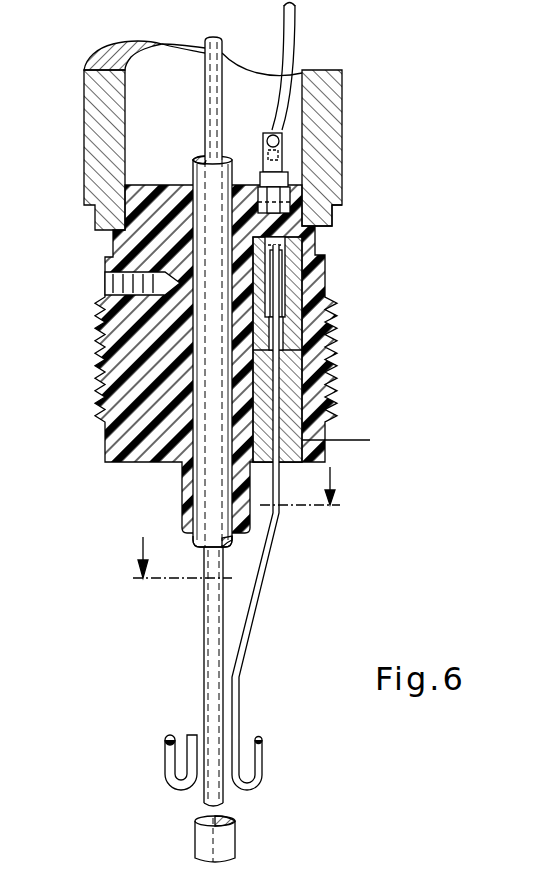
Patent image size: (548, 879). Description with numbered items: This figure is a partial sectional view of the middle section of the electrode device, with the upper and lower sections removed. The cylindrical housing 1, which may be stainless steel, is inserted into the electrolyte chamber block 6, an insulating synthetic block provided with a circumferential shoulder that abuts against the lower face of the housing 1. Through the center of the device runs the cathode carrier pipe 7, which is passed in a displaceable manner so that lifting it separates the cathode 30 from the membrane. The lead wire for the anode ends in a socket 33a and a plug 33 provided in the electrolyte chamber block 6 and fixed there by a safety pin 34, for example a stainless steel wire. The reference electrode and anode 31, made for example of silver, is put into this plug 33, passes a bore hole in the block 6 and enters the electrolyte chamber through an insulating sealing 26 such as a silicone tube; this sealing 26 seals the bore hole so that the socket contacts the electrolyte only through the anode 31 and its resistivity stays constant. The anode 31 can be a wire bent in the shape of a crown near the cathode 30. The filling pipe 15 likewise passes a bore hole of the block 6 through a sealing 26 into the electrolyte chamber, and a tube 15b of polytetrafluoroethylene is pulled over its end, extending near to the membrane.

The cylindrical housing 1 is at (92, 117).
The electrolyte chamber block 6 is at (120, 440).
The cathode carrier pipe 7 is at (205, 545).
The filling pipe 15 is at (207, 45).
The tube 15b is at (208, 627).
The insulating sealing 26 is at (326, 445).
The cathode 30 is at (195, 845).
The reference electrode and anode 31 is at (257, 600).
The plug 33 is at (282, 180).
The socket 33a is at (285, 297).
The safety pin 34 is at (333, 222).